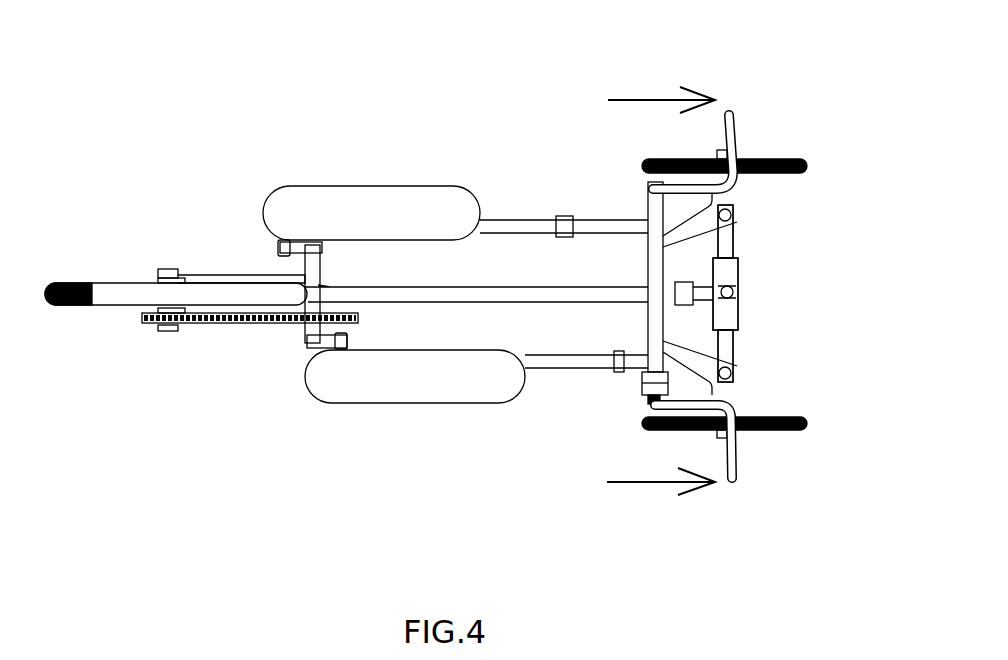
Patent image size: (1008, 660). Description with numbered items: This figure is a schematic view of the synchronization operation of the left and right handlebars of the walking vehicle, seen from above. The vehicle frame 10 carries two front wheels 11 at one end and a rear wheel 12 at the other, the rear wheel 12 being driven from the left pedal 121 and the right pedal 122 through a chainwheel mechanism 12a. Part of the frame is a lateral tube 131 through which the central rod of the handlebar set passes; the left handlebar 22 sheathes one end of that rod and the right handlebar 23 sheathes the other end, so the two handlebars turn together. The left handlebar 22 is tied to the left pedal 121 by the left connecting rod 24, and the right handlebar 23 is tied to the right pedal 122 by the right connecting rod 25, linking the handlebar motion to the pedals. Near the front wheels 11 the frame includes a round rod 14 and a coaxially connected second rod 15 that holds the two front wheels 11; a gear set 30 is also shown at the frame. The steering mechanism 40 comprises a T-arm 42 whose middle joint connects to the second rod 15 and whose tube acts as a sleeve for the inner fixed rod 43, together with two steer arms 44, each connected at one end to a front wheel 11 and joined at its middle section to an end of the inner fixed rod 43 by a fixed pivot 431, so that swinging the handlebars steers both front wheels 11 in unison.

The vehicle frame 10 is at (435, 284).
The front wheels 11 is at (775, 430).
The rear wheel 12 is at (80, 283).
The chainwheel mechanism 12a is at (263, 322).
The left pedal 121 is at (352, 186).
The right pedal 122 is at (397, 382).
The lateral tube 131 is at (652, 327).
The round rod 14 is at (672, 285).
The second rod 15 is at (708, 292).
The left handlebar 22 is at (735, 130).
The right handlebar 23 is at (733, 467).
The left connecting rod 24 is at (610, 227).
The right connecting rod 25 is at (635, 367).
The gear set 30 is at (636, 397).
The steering mechanism 40 is at (757, 293).
The T-arm 42 is at (730, 315).
The inner fixed rod 43 is at (736, 348).
The fixed pivot 431 is at (738, 208).
The steer arms 44 is at (697, 213).